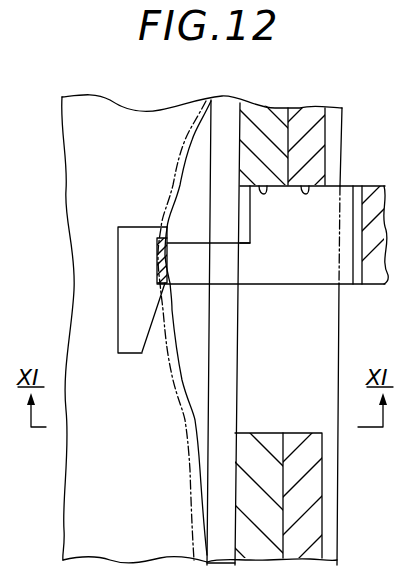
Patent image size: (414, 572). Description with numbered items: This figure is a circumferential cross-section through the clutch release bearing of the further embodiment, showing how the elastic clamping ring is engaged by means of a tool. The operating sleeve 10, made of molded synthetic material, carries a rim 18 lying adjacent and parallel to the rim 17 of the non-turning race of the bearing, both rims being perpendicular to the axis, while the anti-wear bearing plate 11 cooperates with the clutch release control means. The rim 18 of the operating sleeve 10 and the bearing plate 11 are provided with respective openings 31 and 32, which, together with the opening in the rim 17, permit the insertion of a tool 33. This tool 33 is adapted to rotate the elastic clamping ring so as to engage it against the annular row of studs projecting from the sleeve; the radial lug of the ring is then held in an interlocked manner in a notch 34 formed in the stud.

The operating sleeve 10 is at (113, 492).
The anti-wear bearing plate 11 is at (305, 122).
The rim 17 is at (225, 113).
The rim 18 is at (263, 116).
The opening 31 is at (263, 185).
The opening 32 is at (305, 185).
The tool 33 is at (292, 272).
The notch 34 is at (168, 247).